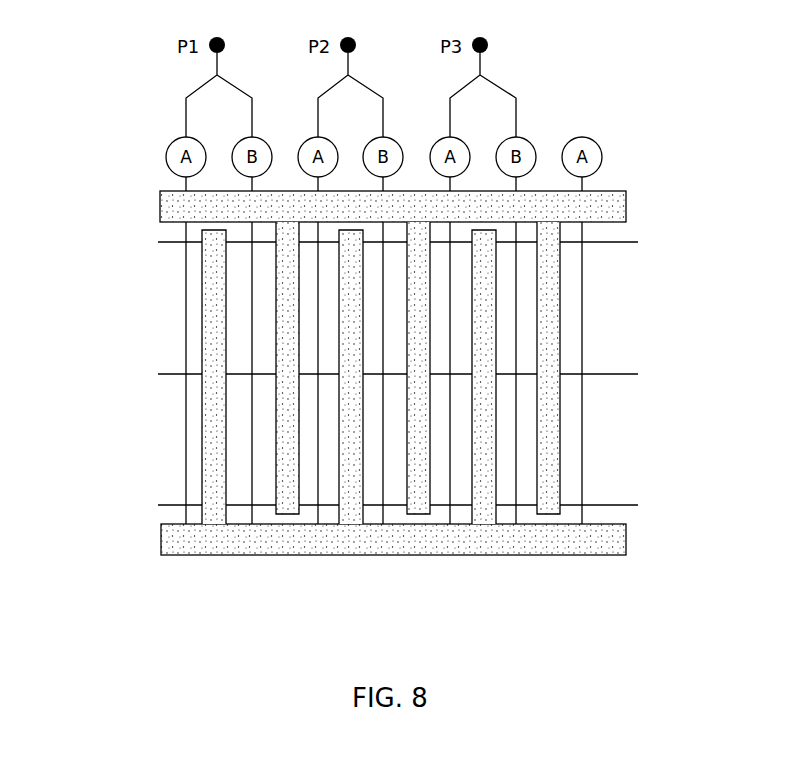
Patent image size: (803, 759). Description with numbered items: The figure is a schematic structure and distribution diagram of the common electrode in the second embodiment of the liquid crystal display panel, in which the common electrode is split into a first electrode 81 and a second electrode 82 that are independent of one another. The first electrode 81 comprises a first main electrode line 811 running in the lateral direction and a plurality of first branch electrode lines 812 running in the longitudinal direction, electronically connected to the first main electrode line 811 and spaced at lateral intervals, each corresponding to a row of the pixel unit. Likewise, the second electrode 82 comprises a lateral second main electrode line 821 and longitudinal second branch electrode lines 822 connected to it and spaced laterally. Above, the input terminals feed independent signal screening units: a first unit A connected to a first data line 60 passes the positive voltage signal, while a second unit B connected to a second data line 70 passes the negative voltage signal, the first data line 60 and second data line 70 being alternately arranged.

The first data line 60 is at (186, 270).
The second data line 70 is at (251, 424).
The first electrode 81 is at (380, 438).
The first main electrode line 811 is at (173, 537).
The first branch electrode lines 812 is at (215, 318).
The second electrode 82 is at (386, 329).
The second main electrode line 821 is at (172, 210).
The second branch electrode lines 822 is at (547, 323).